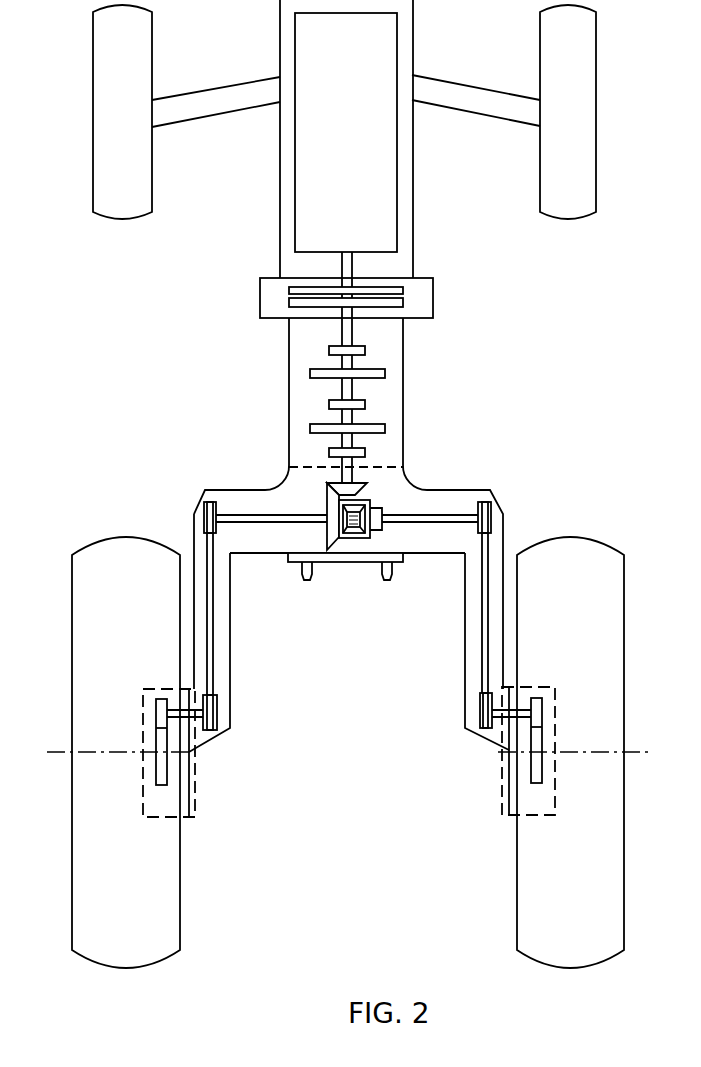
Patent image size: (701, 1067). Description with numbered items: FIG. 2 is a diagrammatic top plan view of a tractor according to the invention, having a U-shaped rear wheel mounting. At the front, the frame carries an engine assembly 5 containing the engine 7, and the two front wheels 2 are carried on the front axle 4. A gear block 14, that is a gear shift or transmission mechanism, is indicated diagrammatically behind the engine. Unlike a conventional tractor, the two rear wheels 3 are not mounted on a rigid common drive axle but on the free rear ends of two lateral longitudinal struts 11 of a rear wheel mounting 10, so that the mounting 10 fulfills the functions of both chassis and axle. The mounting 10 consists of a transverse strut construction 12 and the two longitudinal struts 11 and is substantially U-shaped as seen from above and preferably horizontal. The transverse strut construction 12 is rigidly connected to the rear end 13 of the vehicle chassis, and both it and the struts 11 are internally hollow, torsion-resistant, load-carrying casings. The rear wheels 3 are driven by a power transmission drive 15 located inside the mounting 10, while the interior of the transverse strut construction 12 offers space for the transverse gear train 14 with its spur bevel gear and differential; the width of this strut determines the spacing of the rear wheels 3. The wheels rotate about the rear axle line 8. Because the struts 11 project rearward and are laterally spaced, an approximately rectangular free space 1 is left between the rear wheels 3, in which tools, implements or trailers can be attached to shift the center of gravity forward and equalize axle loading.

The free space 1 is at (356, 658).
The front wheels 2 is at (101, 38).
The rear wheels 3 is at (81, 590).
The front axle 4 is at (203, 100).
The engine assembly 5 is at (412, 160).
The engine 7 is at (300, 158).
The rear axle 8 is at (105, 752).
The rear wheel mounting 10 is at (227, 486).
The longitudinal struts 11 is at (230, 648).
The transverse strut construction 12 is at (255, 500).
The rear end of the vehicle chassis 13 is at (403, 457).
The gear block 14 is at (380, 407).
The power transmission drive 15 is at (468, 505).